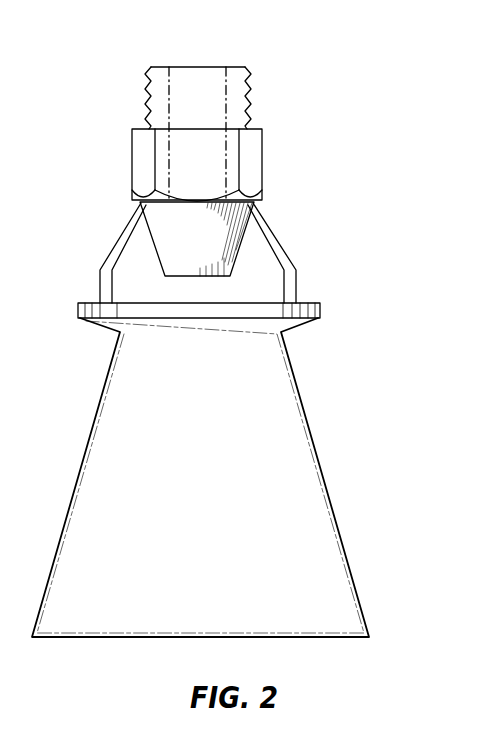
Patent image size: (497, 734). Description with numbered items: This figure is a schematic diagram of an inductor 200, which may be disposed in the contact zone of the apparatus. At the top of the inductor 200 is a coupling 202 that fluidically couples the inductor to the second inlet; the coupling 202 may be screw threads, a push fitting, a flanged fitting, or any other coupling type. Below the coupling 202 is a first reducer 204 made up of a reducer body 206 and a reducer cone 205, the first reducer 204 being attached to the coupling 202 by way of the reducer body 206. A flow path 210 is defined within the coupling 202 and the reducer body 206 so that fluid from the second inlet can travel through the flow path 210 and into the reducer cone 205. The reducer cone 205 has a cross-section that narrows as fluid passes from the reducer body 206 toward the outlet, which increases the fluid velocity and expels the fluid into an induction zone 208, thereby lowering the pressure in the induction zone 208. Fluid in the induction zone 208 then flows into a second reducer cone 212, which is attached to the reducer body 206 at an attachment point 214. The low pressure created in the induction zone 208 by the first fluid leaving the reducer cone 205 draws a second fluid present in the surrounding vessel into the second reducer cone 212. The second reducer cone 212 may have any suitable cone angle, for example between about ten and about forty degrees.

The inductor 200 is at (362, 58).
The coupling 202 is at (251, 97).
The first reducer 204 is at (270, 138).
The reducer cone 205 is at (243, 290).
The reducer body 206 is at (263, 165).
The induction zone 208 is at (246, 236).
The flow path 210 is at (197, 66).
The second reducer cone 212 is at (304, 402).
The attachment point 214 is at (293, 259).